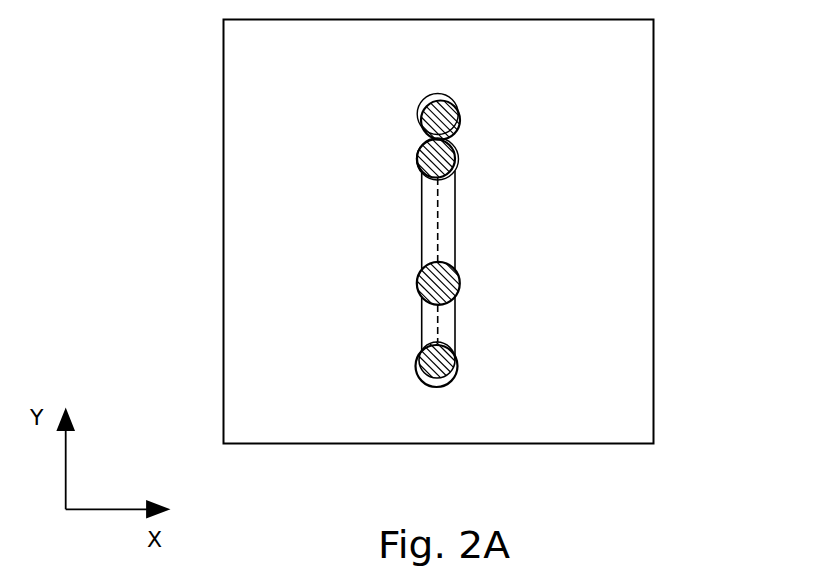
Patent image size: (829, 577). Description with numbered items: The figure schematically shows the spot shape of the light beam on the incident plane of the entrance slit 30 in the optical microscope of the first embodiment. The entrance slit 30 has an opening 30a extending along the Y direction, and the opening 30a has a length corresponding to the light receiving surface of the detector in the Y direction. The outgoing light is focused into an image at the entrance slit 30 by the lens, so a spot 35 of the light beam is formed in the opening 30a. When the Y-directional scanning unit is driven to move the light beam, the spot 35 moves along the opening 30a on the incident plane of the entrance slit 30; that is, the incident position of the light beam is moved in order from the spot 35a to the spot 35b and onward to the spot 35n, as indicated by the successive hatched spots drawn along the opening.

The entrance slit 30 is at (655, 70).
The opening 30a is at (421, 247).
The spot 35 is at (460, 283).
The spot 35a is at (460, 120).
The spot 35b is at (459, 160).
The spot 35n is at (459, 365).